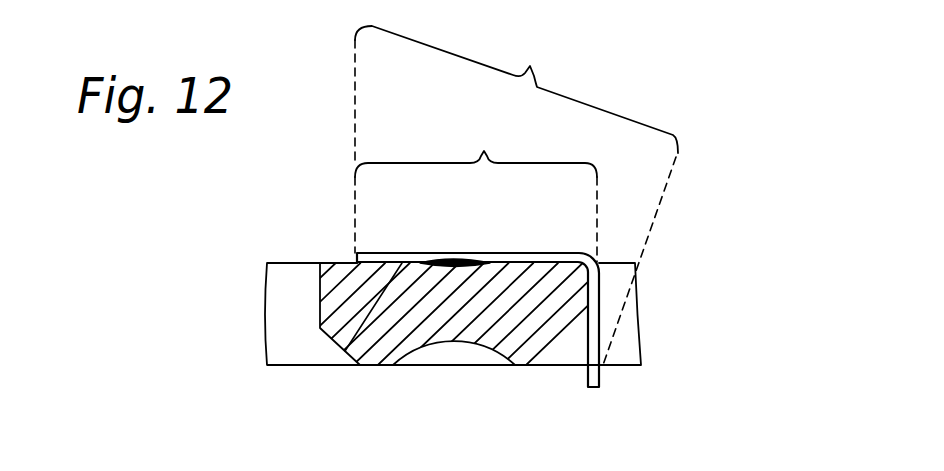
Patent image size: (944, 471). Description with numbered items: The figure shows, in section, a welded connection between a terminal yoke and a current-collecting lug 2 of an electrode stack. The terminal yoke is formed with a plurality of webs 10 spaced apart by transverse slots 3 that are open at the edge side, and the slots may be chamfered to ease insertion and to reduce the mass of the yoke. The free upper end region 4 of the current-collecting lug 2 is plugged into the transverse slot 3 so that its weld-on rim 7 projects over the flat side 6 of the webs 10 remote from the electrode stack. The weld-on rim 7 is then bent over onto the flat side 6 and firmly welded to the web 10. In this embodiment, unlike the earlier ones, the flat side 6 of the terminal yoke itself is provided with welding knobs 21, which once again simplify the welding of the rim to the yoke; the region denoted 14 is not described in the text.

The current-collecting lug 2 is at (580, 380).
The transverse slot 3 is at (630, 353).
The upper end region 4 is at (516, 195).
The flat side 6 is at (337, 262).
The weld-on rim 7 is at (476, 195).
The web 10 is at (453, 315).
The recess wall with chamfer 14 is at (358, 337).
The welding knob 21 is at (457, 260).